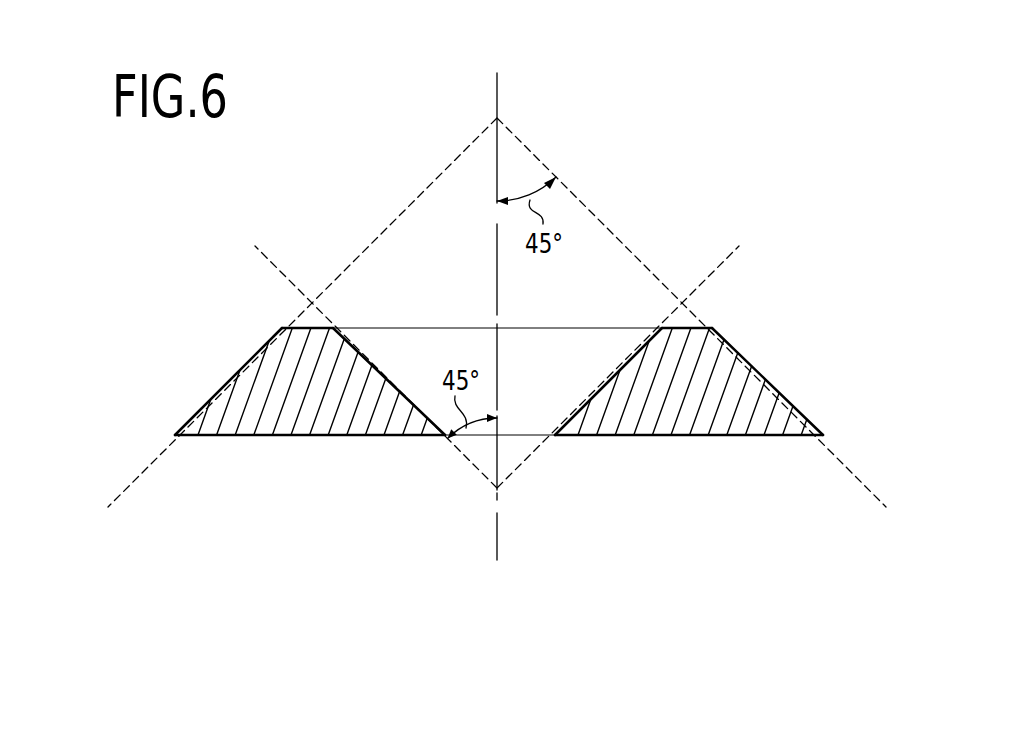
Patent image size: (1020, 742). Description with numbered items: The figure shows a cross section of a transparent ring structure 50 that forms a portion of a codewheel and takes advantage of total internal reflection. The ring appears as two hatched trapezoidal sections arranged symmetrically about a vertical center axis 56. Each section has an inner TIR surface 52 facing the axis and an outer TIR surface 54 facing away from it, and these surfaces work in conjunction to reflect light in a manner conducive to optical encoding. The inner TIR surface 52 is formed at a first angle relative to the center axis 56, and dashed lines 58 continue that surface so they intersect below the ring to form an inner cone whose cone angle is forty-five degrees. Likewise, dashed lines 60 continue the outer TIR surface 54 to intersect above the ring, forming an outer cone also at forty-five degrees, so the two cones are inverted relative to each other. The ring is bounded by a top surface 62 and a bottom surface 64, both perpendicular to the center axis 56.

The transparent ring structure 50 is at (526, 394).
The inner TIR surface 52 is at (370, 362).
The outer TIR surface 54 is at (233, 377).
The center axis 56 is at (497, 88).
The lines of the inner TIR surface 58 is at (463, 458).
The lines of the outer TIR surface 60 is at (373, 238).
The top surface 62 is at (300, 323).
The bottom surface 64 is at (301, 437).